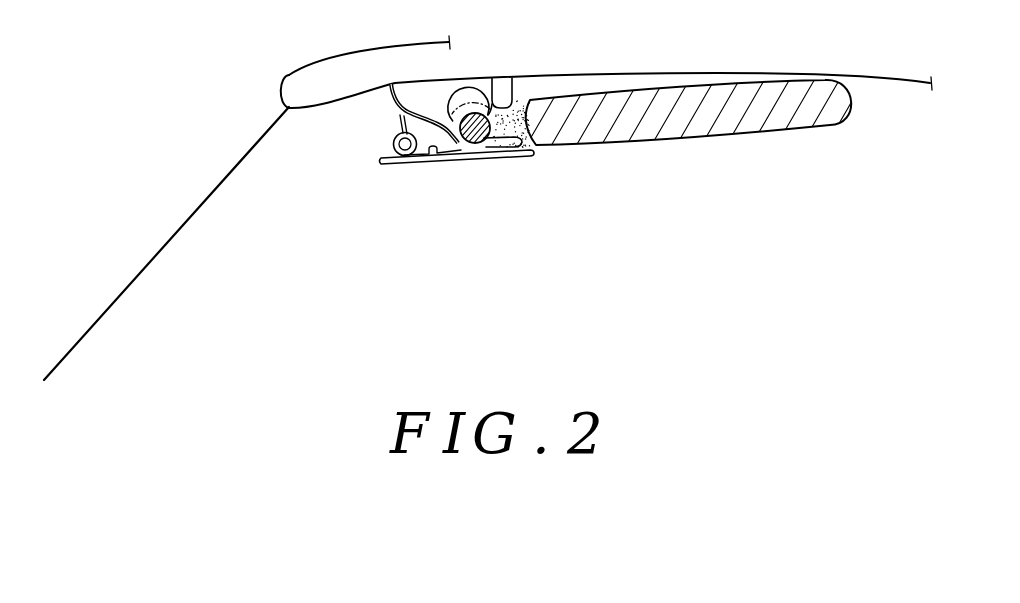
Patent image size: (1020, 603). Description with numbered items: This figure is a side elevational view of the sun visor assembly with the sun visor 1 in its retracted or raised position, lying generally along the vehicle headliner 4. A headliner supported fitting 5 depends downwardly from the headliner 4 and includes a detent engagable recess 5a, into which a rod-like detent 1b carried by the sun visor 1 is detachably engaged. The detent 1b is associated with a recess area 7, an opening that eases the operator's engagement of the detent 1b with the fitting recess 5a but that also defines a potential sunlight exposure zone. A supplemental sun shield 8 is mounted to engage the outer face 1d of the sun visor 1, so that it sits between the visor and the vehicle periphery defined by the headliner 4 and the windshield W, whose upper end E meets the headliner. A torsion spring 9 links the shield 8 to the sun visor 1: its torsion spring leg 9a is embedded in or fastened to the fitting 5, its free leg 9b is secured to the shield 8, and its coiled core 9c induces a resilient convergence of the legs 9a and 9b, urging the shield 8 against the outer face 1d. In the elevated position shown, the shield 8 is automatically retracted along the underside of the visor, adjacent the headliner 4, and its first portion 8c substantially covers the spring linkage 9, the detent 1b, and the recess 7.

The sun visor 1 is at (677, 103).
The detent 1b is at (492, 150).
The outer face of the sun visor 1d is at (648, 143).
The vehicle headliner 4 is at (343, 62).
The headliner supported fitting 5 is at (425, 92).
The detent engagable recess 5a is at (487, 100).
The recess area 7 is at (513, 114).
The supplemental sun shield 8 is at (417, 163).
The first portion of the sun shield 8c is at (382, 166).
The torsion spring 9 is at (391, 150).
The torsion spring leg 9a is at (401, 119).
The free leg of the torsion spring 9b is at (432, 151).
The coiled core of the torsion spring 9c is at (392, 140).
The upper end of the windshield E is at (271, 127).
The vehicle windshield W is at (119, 297).